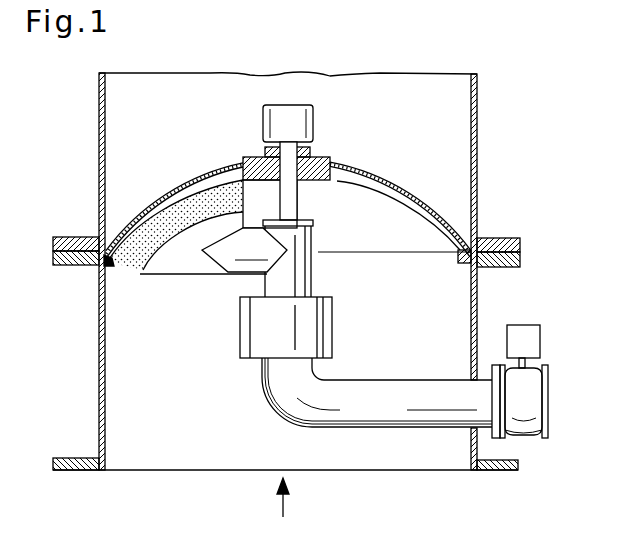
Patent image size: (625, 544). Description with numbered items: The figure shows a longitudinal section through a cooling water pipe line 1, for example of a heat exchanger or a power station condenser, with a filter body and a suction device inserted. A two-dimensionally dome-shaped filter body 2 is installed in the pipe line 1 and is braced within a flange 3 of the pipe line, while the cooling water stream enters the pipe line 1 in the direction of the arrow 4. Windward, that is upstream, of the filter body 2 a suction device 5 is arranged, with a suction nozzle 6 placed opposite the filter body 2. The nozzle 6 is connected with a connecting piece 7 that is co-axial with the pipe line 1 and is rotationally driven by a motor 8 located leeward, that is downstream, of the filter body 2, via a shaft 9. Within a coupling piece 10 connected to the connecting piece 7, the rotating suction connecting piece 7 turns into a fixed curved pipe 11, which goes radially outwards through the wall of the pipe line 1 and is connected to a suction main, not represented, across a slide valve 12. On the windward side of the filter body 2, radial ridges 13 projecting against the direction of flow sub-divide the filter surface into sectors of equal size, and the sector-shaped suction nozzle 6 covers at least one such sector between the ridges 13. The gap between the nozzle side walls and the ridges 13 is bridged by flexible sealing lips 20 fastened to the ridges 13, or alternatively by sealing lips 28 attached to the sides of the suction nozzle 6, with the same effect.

The pipe line 1 is at (478, 157).
The filter body 2 is at (177, 187).
The flange 3 is at (505, 238).
The arrow 4 is at (283, 505).
The suction device 5 is at (240, 338).
The suction nozzle 6 is at (192, 253).
The connecting piece 7 is at (300, 275).
The motor 8 is at (313, 122).
The shaft 9 is at (290, 201).
The coupling piece 10 is at (324, 343).
The curved pipe 11 is at (385, 414).
The slide valve 12 is at (533, 438).
The radial ridges 13 is at (98, 275).
The flexible sealing lips 20 is at (116, 267).
The sealing lips 28 is at (116, 267).